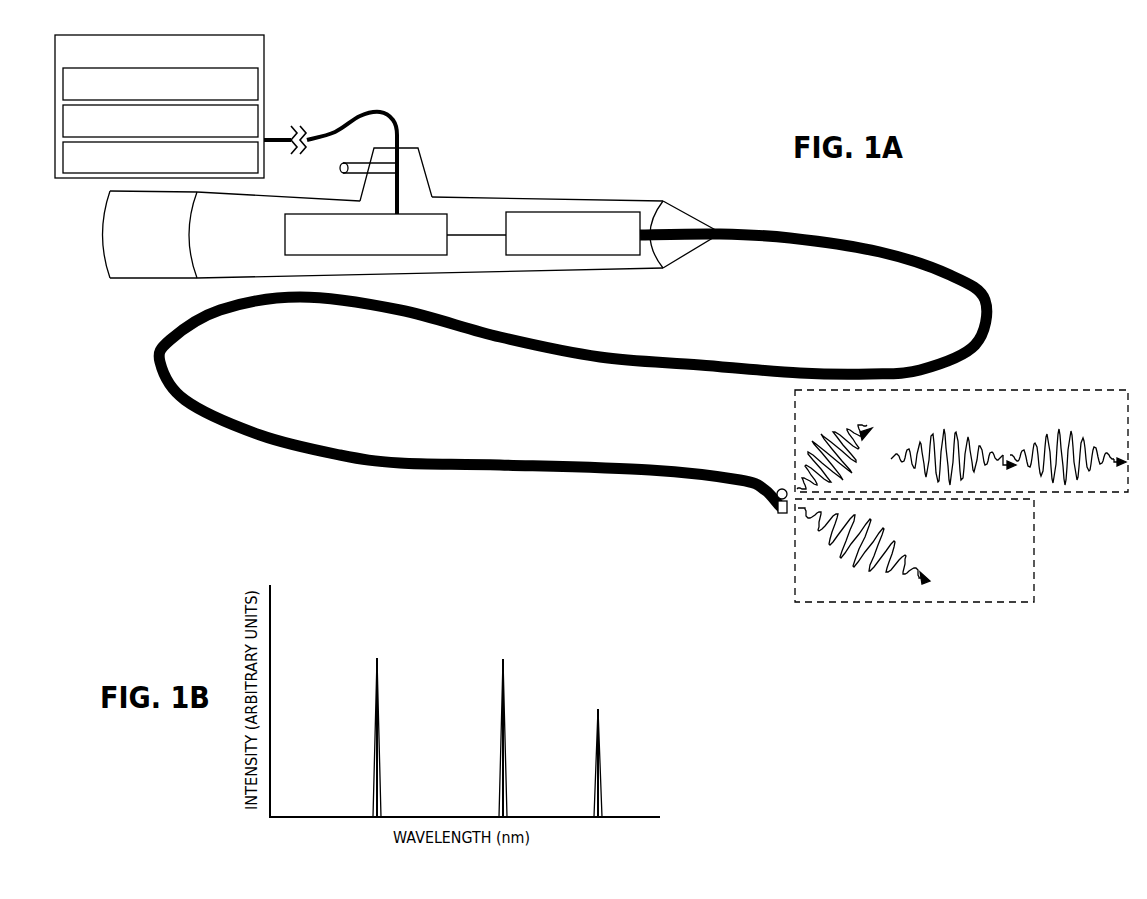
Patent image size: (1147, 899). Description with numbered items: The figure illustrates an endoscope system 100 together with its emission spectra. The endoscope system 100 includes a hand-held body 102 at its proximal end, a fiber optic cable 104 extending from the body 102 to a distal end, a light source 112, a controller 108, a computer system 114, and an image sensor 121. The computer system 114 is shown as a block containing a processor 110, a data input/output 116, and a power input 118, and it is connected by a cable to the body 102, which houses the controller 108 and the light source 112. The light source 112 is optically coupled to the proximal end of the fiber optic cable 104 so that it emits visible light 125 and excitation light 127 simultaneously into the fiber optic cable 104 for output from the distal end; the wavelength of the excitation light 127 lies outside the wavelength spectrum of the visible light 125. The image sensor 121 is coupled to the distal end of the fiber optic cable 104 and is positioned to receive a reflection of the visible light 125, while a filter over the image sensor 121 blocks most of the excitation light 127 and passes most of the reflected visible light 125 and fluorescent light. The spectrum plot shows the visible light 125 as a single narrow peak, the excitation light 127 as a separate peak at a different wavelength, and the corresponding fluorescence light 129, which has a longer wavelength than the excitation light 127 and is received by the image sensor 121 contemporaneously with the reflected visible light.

In FIG. 1A, the endoscope system 100 is at (570, 321).
In FIG. 1A, the body 102 is at (603, 186).
In FIG. 1A, the fiber optic cable 104 is at (967, 232).
In FIG. 1A, the controller 108 is at (366, 234).
In FIG. 1A, the processor 110 is at (160, 84).
In FIG. 1A, the light source 112 is at (573, 233).
In FIG. 1A, the computer system 114 is at (159, 106).
In FIG. 1A, the data input/output 116 is at (160, 121).
In FIG. 1A, the power input 118 is at (160, 157).
In FIG. 1A, the image sensor 121 is at (782, 513).
In FIG. 1A, the visible light 125 is at (961, 441).
In FIG. 1B, the visible light 125 is at (375, 715).
In FIG. 1A, the excitation light 127 is at (914, 550).
In FIG. 1B, the excitation light 127 is at (505, 718).
In FIG. 1B, the fluorescence light 129 is at (602, 743).